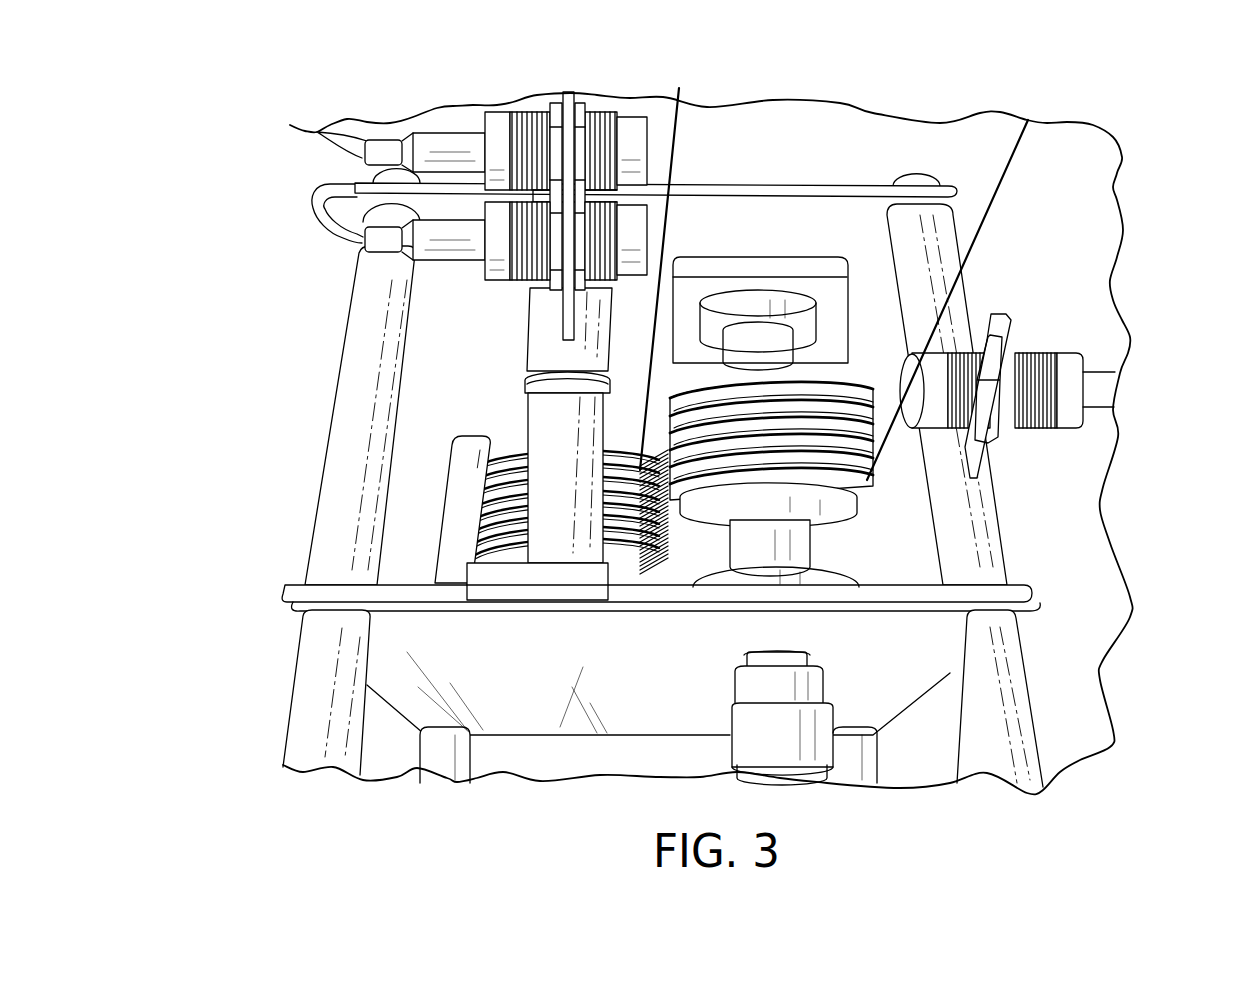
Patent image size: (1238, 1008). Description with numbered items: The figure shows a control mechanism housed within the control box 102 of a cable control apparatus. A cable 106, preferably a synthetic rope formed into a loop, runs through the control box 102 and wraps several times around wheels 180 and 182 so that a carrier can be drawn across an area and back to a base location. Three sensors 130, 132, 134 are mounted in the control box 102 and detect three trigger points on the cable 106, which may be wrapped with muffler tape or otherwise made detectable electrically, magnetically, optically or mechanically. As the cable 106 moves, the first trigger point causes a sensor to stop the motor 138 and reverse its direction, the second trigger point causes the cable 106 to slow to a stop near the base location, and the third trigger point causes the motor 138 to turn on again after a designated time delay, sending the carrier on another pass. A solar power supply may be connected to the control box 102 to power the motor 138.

The control box 102 is at (305, 388).
The cable 106 is at (677, 150).
The sensor 130 is at (633, 130).
The sensor 132 is at (640, 228).
The sensor 134 is at (908, 428).
The motor 138 is at (787, 723).
The wheel 180 is at (637, 573).
The wheel 182 is at (835, 537).